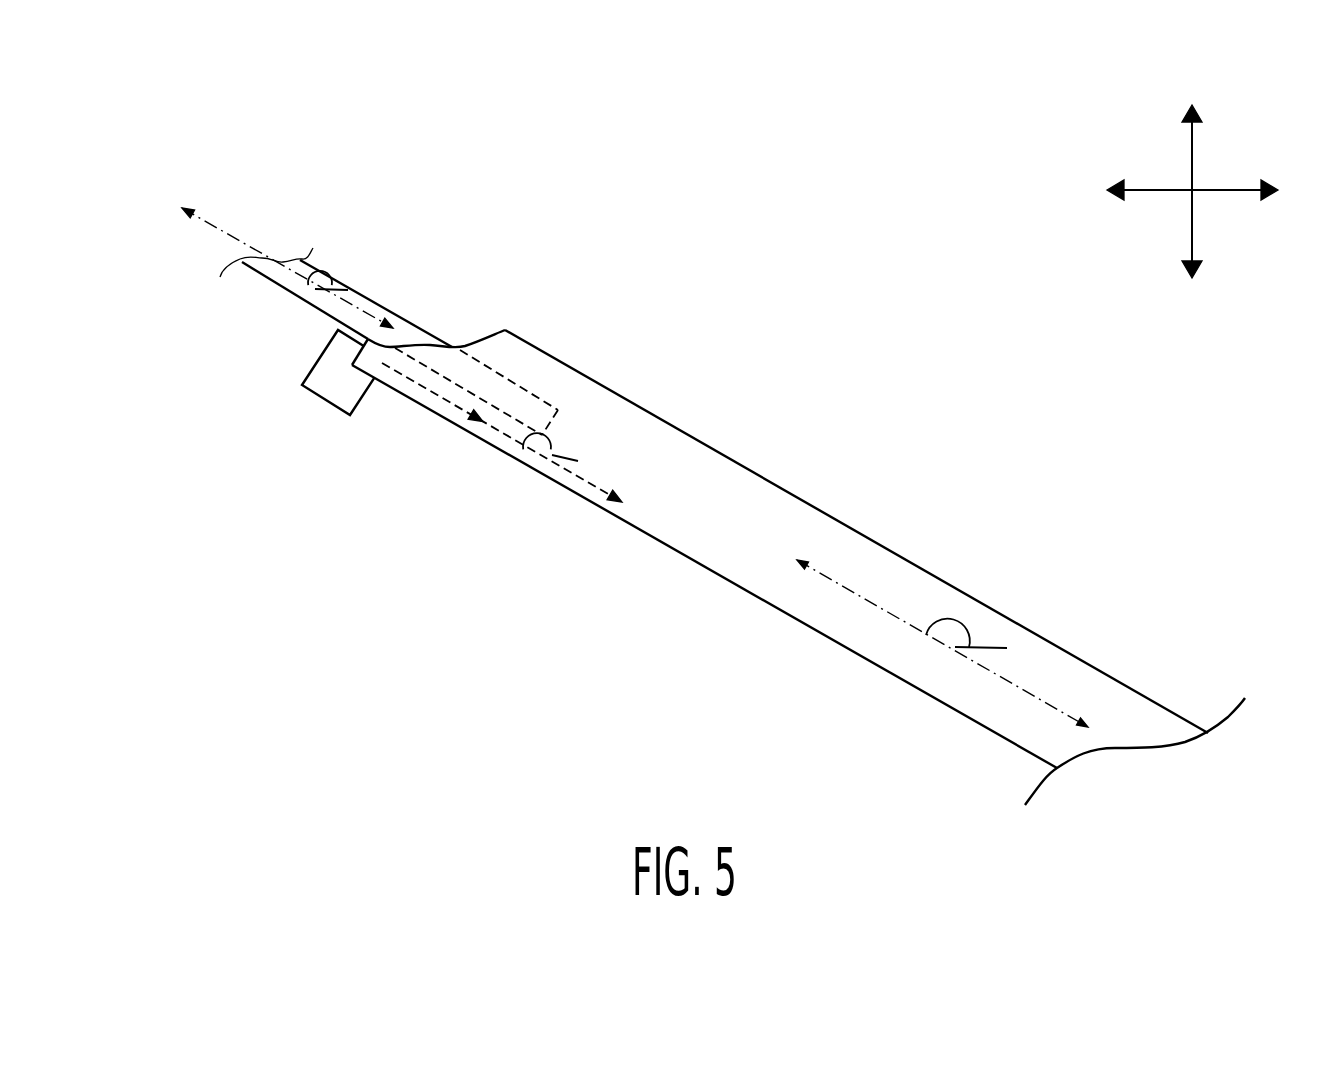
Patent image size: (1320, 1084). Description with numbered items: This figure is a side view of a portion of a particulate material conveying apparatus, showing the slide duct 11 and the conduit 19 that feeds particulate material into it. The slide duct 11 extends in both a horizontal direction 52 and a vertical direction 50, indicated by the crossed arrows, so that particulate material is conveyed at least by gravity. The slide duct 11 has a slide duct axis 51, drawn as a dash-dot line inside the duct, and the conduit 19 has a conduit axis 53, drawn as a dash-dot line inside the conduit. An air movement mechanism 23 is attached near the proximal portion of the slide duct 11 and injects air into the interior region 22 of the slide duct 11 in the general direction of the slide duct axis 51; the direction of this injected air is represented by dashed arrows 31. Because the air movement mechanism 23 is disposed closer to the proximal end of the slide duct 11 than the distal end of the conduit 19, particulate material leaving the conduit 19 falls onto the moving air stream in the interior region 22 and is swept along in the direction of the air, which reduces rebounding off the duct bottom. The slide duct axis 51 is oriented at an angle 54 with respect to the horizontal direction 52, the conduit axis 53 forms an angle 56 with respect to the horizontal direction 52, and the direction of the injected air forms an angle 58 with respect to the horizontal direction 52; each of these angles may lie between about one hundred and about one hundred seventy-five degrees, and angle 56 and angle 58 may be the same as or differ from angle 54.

The slide duct 11 is at (738, 463).
The conduit 19 is at (407, 322).
The interior region 22 is at (750, 543).
The air movement mechanism 23 is at (320, 395).
The arrows 31 is at (515, 440).
The vertical direction 50 is at (1192, 148).
The slide duct axis 51 is at (890, 613).
The horizontal direction 52 is at (1223, 192).
The conduit axis 53 is at (222, 233).
The angle 54 is at (957, 623).
The angle 56 is at (336, 284).
The angle 58 is at (551, 447).